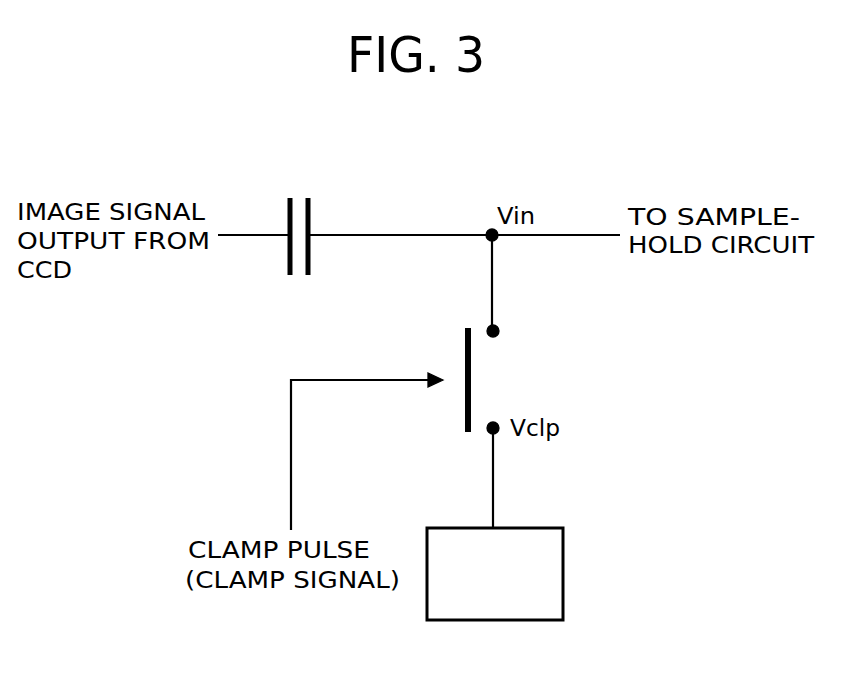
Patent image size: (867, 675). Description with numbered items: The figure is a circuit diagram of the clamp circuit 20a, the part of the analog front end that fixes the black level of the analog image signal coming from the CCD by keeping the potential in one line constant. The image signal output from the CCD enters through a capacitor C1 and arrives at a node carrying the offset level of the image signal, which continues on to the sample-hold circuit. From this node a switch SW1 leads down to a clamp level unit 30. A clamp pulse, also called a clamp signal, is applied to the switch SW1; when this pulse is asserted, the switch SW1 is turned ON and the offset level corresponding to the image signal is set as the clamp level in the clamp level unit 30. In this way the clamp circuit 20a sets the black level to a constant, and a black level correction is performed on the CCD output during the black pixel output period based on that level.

The clamp circuit 20a is at (604, 372).
The clamp level unit 30 is at (563, 572).
The capacitor C1 is at (298, 221).
The switch SW1 is at (437, 329).